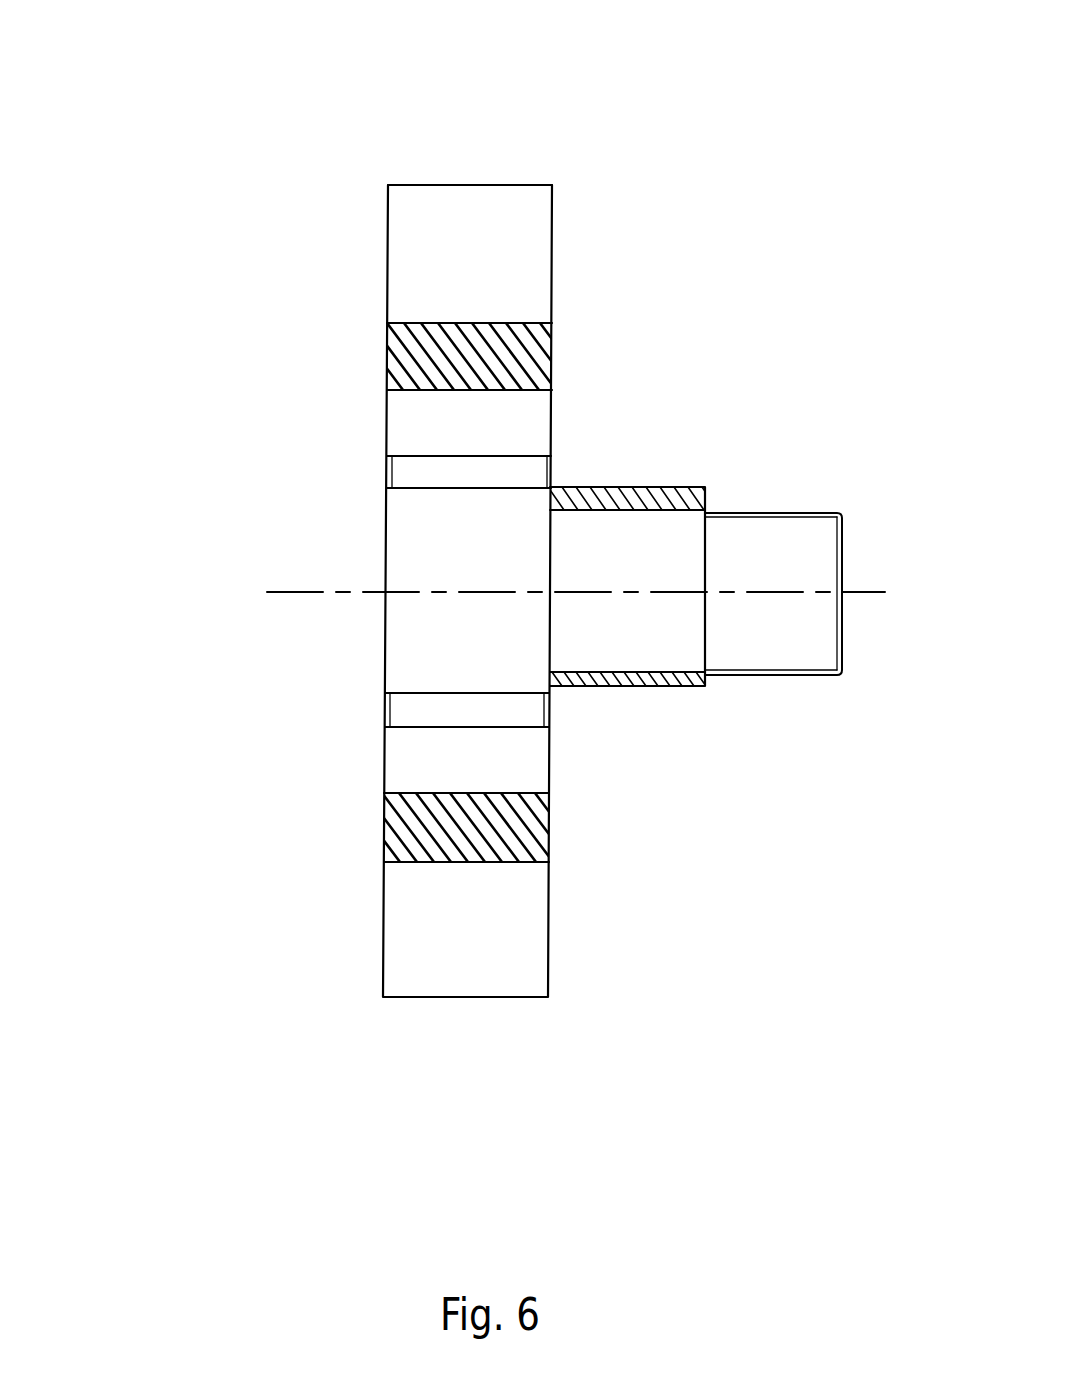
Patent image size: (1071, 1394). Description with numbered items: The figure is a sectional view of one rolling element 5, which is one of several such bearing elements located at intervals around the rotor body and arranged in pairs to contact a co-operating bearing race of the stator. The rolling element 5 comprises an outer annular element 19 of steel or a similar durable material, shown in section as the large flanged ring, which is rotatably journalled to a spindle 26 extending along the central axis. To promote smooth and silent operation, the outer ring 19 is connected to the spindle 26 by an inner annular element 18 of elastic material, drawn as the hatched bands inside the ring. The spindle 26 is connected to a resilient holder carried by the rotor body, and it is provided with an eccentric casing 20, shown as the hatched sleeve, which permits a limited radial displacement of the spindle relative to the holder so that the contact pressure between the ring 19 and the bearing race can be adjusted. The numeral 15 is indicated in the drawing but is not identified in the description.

The rolling element 5 is at (368, 857).
The annular groove 15 is at (397, 428).
The inner annular element 18 is at (413, 337).
The outer annular element 19 is at (415, 228).
The eccentric casing 20 is at (606, 468).
The spindle 26 is at (678, 600).